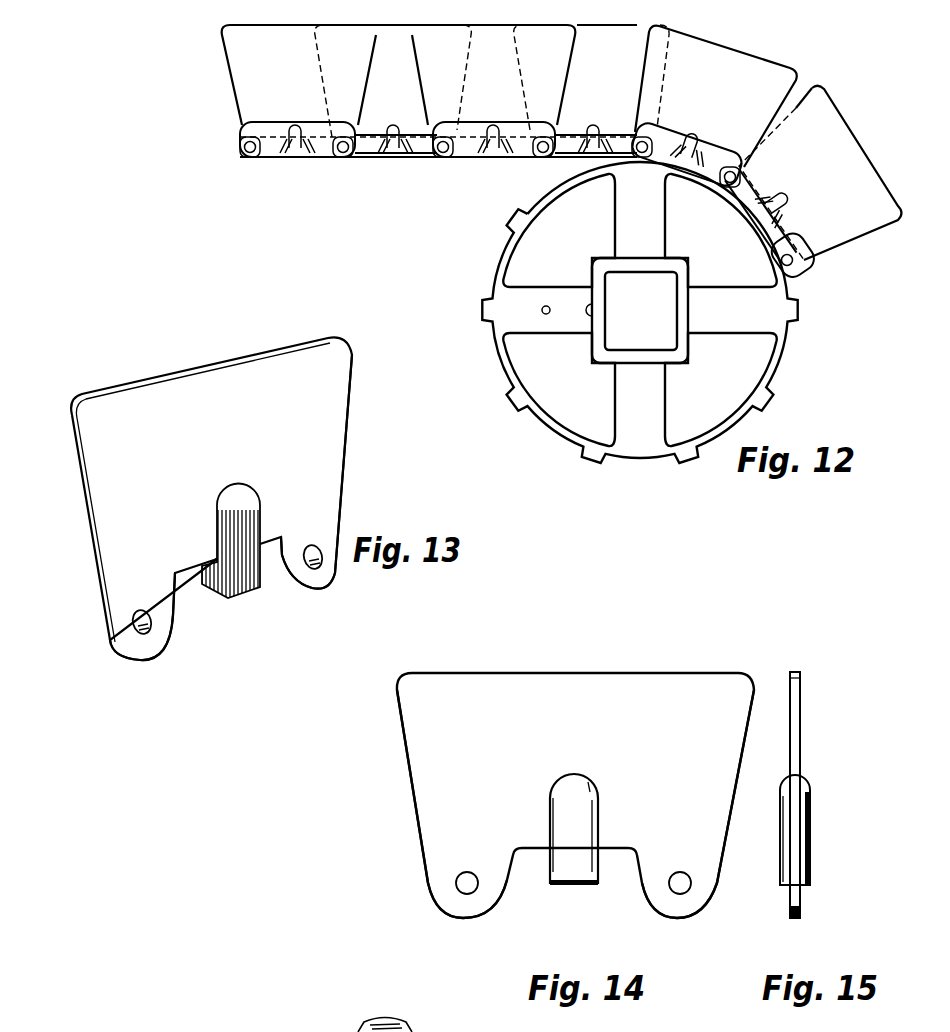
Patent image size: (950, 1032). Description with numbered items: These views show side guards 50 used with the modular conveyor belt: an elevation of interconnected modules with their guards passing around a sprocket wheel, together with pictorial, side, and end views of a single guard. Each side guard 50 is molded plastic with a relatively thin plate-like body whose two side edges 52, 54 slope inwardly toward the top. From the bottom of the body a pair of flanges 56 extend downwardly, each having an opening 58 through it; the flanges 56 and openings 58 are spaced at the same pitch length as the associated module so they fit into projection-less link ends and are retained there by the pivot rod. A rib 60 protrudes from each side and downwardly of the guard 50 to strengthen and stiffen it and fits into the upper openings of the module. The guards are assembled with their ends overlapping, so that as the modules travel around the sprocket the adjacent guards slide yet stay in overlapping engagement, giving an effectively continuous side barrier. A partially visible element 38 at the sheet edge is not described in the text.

In FIG. 12, the side guard 50 is at (274, 97).
In FIG. 13, the side guard 50 is at (218, 441).
In FIG. 14, the side guard 50 is at (559, 735).
In FIG. 15, the side guard 50 is at (801, 723).
In FIG. 13, the inwardly sloped edge 52 is at (82, 508).
In FIG. 14, the inwardly sloped edge 52 is at (412, 789).
In FIG. 13, the inwardly sloped edge 54 is at (342, 412).
In FIG. 14, the inwardly sloped edge 54 is at (731, 823).
In FIG. 13, the flange 56 is at (123, 643).
In FIG. 14, the flange 56 is at (467, 908).
In FIG. 15, the flange 56 is at (793, 920).
In FIG. 13, the opening 58 is at (148, 641).
In FIG. 14, the opening 58 is at (471, 885).
In FIG. 12, the rib 60 is at (300, 154).
In FIG. 13, the rib 60 is at (253, 508).
In FIG. 14, the rib 60 is at (556, 845).
In FIG. 15, the rib 60 is at (811, 805).
In FIG. 14, the fastener 38 is at (420, 1025).